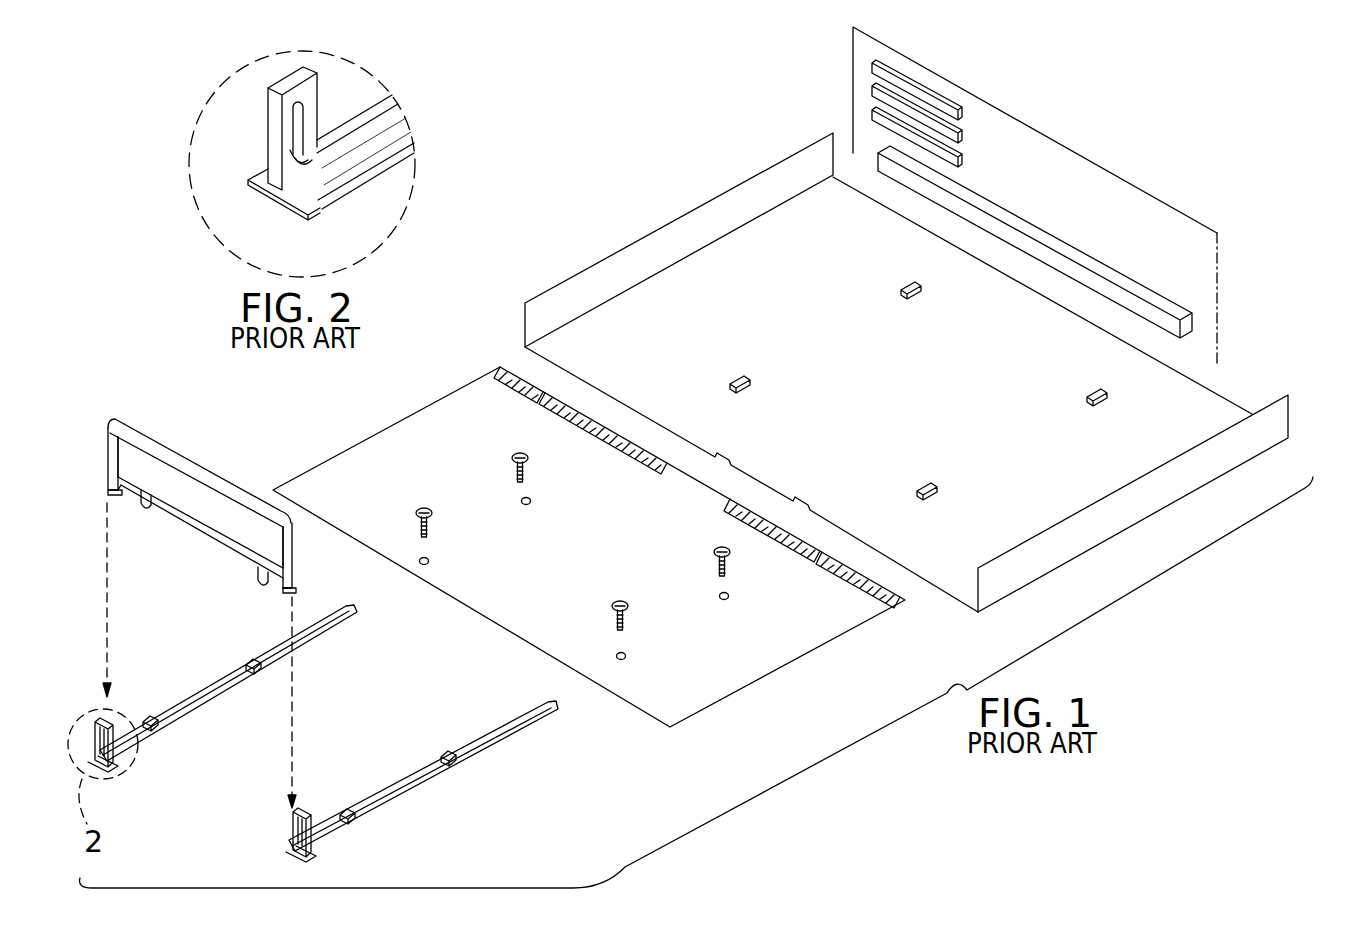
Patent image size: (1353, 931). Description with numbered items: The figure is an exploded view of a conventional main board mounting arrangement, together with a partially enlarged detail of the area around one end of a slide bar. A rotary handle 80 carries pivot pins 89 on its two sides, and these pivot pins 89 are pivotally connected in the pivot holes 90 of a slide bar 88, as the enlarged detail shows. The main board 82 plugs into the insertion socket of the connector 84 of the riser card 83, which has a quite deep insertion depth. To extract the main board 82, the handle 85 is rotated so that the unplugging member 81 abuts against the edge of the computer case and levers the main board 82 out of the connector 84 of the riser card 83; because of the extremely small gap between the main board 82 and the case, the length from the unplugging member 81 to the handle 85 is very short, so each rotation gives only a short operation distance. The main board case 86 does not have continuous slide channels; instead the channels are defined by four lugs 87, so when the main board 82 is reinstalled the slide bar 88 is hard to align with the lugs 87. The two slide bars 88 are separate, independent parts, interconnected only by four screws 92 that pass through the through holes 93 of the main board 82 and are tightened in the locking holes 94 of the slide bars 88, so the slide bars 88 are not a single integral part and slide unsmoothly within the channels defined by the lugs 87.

In FIG. 1, the rotary handle 80 is at (191, 452).
In FIG. 1, the unplugging member 81 is at (146, 508).
In FIG. 1, the main board 82 is at (768, 682).
In FIG. 1, the riser card 83 is at (1170, 210).
In FIG. 1, the connector 84 is at (1054, 240).
In FIG. 1, the handle 85 is at (226, 484).
In FIG. 1, the main board case 86 is at (1080, 548).
In FIG. 1, the lugs 87 is at (905, 283).
In FIG. 1, the slide bar 88 is at (417, 778).
In FIG. 1, the pivot pins 89 is at (118, 478).
In FIG. 1, the pivot holes 90 is at (117, 748).
In FIG. 2, the pivot holes 90 is at (325, 150).
In FIG. 1, the screws 92 is at (511, 461).
In FIG. 1, the through holes 93 is at (531, 500).
In FIG. 1, the locking holes 94 is at (150, 716).